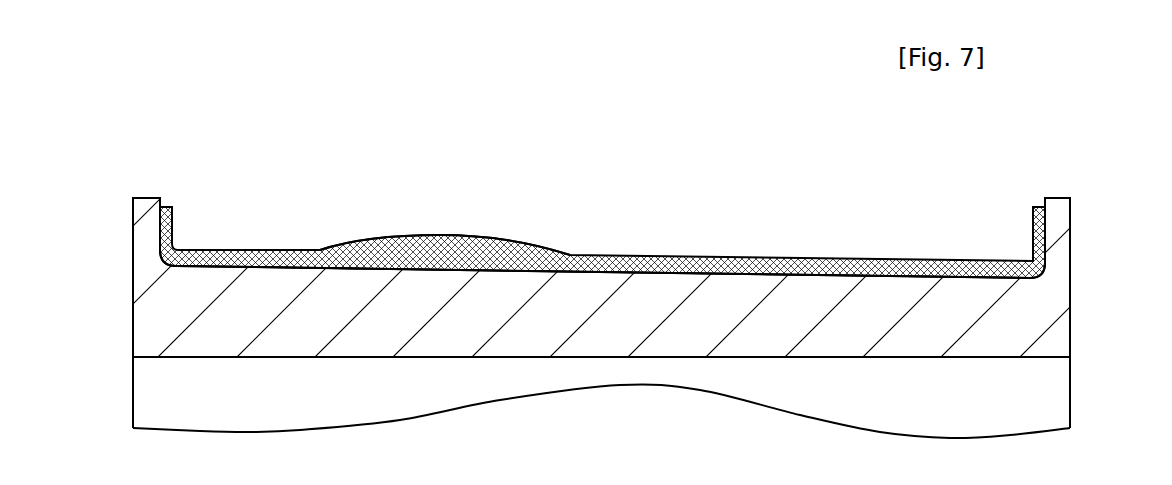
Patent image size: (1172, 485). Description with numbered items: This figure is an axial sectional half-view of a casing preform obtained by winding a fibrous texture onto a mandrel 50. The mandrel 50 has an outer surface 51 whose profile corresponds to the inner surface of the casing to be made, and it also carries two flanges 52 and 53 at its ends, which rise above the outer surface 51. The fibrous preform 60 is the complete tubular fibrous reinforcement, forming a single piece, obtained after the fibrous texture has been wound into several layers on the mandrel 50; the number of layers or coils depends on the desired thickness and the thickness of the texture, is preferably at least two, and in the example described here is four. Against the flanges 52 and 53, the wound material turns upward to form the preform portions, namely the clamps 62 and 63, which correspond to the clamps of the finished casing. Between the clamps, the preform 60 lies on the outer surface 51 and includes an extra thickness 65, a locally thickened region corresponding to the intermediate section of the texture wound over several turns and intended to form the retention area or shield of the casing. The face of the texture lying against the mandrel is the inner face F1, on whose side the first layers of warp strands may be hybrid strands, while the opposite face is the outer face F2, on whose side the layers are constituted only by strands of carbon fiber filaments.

The mandrel 50 is at (1078, 280).
The outer surface 51 is at (425, 270).
The flange 52 is at (1063, 223).
The flange 53 is at (146, 227).
The fibrous preform 60 is at (410, 225).
The clamp 62 is at (1032, 227).
The clamp 63 is at (177, 213).
The extra thickness 65 is at (490, 239).
The inner face F1 is at (330, 268).
The outer face F2 is at (320, 250).